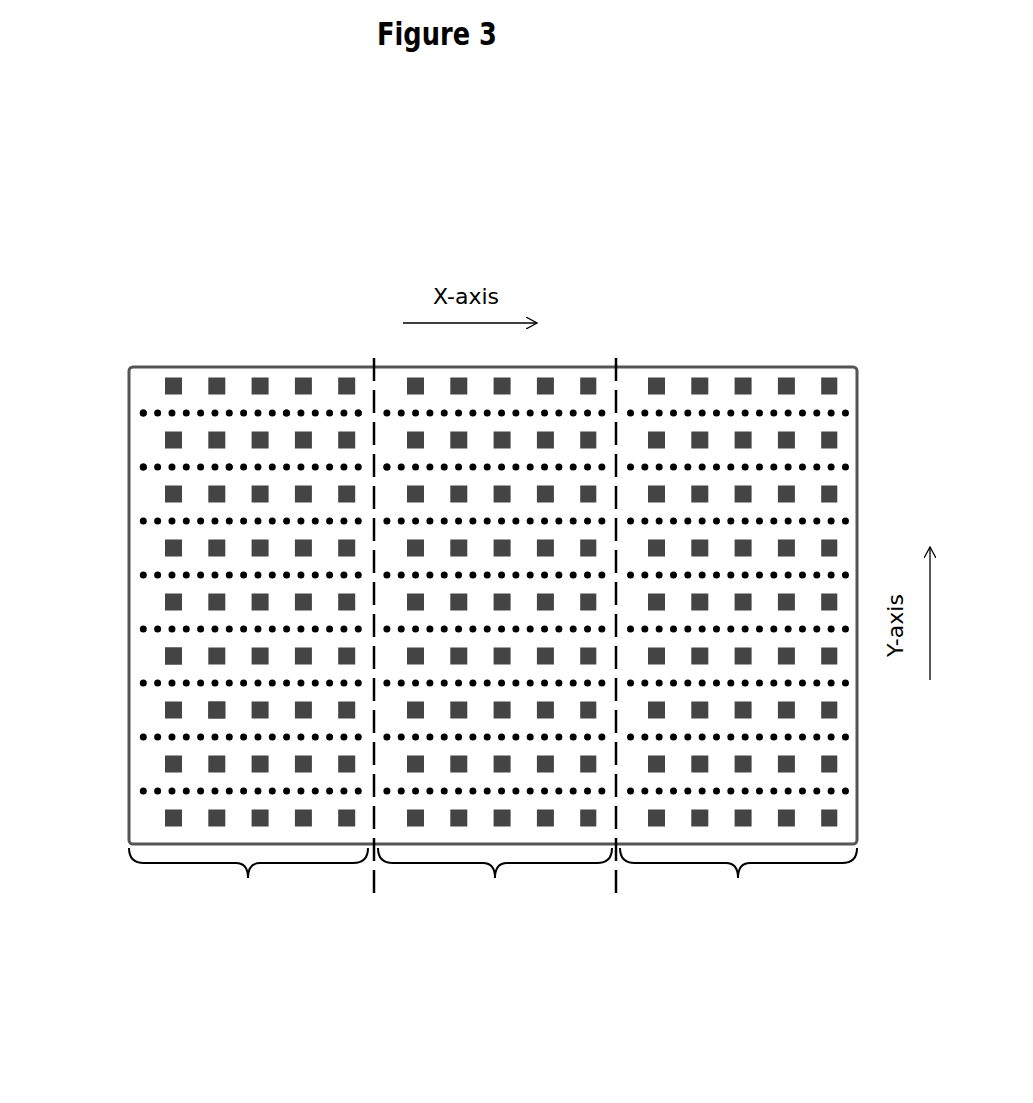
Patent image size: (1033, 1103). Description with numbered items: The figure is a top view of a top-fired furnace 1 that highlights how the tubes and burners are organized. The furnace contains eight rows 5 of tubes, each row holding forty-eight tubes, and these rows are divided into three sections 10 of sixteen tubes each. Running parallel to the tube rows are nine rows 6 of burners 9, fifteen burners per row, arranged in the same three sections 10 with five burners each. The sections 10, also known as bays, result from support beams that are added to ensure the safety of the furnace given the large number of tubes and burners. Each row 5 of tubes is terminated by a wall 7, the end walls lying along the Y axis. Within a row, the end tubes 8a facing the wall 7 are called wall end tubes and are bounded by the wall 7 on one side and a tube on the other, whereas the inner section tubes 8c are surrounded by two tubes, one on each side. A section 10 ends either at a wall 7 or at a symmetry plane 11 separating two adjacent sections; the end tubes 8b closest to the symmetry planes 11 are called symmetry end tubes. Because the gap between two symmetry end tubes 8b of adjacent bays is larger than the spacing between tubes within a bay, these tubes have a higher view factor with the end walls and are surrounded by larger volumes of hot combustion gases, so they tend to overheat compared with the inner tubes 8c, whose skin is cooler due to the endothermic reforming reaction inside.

The top-fired furnace 1 is at (283, 196).
The row of tubes 5 is at (132, 575).
The row of burners 6 is at (148, 657).
The wall 7 is at (120, 410).
The wall end tube 8a is at (147, 465).
The symmetry end tube 8b is at (383, 463).
The inner section tube 8c is at (230, 464).
The burner 9 is at (215, 718).
The section 10 is at (493, 888).
The symmetry plane 11 is at (372, 915).